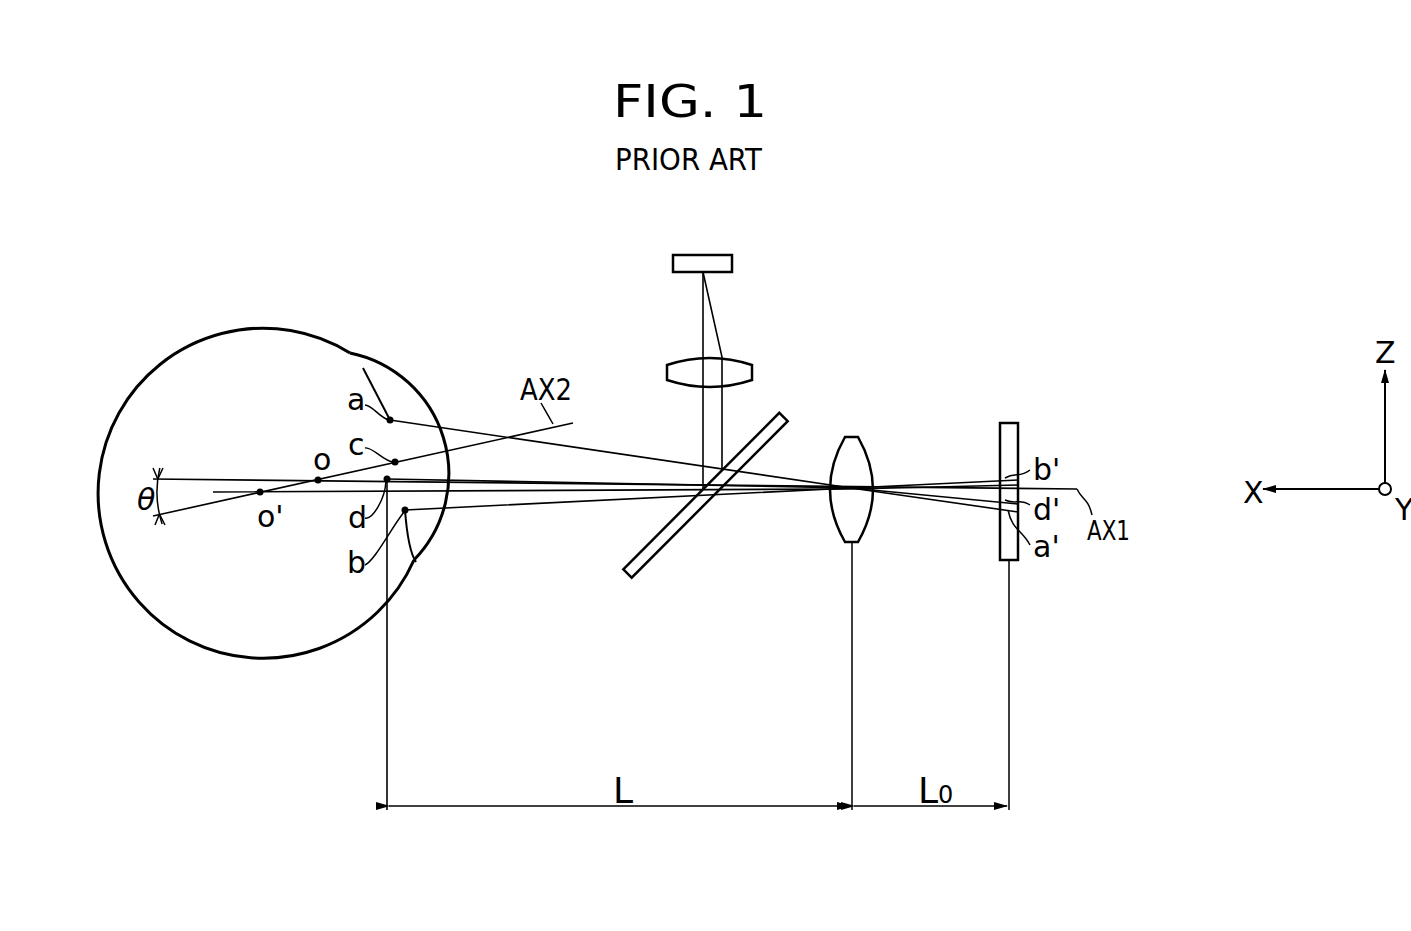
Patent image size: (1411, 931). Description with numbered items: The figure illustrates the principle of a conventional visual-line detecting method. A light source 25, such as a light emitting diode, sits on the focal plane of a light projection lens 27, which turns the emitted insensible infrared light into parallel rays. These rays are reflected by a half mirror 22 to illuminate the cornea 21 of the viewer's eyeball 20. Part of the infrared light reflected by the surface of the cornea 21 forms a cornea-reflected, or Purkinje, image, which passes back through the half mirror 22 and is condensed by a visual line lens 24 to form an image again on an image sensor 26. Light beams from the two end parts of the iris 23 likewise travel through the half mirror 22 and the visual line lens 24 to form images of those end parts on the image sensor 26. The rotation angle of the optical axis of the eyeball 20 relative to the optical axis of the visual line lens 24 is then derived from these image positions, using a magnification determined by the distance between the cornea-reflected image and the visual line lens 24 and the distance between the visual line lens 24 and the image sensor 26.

The eyeball 20 is at (262, 327).
The cornea 21 is at (418, 395).
The half mirror 22 is at (657, 557).
The iris 23 is at (363, 368).
The visual line lens 24 is at (853, 437).
The light source 25 is at (733, 263).
The image sensor 26 is at (1010, 423).
The light projection lens 27 is at (752, 371).